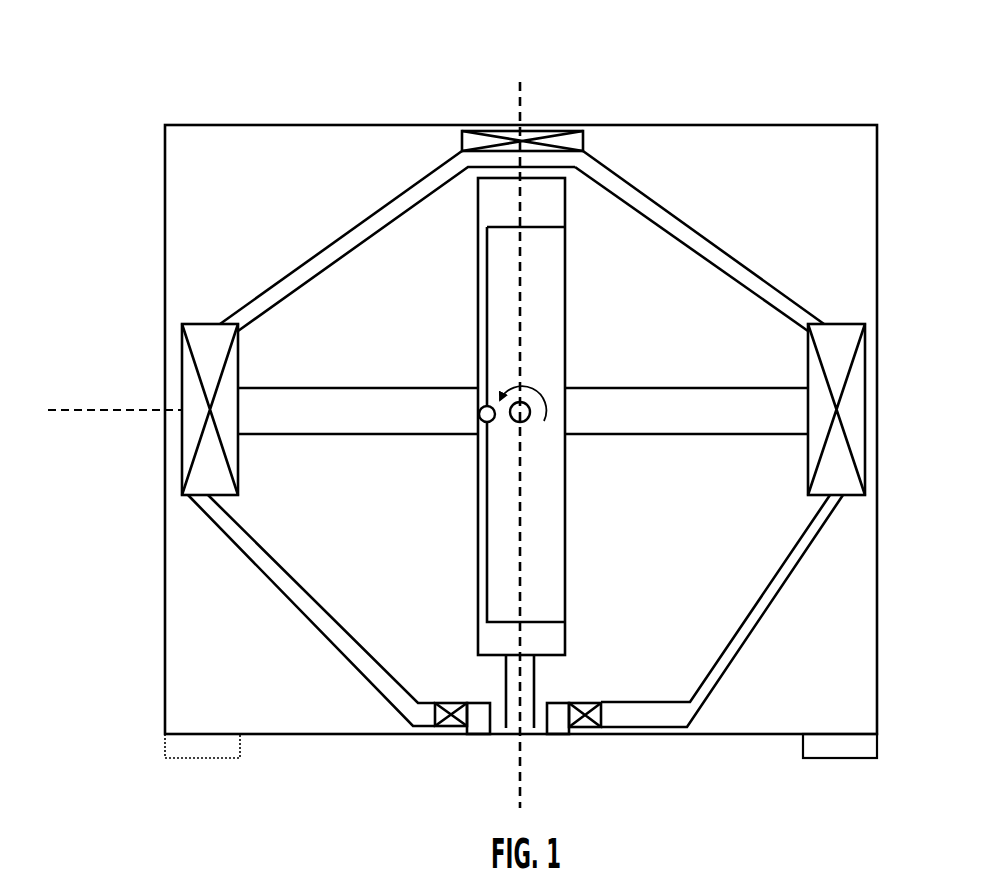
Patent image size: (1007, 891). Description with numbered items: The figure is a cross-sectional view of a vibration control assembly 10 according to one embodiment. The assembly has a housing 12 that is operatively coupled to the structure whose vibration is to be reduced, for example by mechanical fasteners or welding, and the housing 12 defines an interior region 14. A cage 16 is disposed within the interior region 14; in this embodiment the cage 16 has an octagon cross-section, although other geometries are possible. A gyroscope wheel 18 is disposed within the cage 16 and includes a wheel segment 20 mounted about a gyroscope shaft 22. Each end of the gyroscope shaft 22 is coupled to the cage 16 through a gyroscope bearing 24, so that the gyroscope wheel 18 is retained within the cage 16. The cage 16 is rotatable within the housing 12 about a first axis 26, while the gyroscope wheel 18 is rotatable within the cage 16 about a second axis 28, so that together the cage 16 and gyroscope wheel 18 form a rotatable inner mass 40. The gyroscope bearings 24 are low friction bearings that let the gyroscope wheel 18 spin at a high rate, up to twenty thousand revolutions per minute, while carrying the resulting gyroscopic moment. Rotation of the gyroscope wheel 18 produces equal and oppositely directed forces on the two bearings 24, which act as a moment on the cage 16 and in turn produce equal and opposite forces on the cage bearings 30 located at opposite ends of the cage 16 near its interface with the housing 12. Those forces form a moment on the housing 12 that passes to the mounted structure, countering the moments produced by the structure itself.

The vibration control assembly 10 is at (198, 65).
The housing 12 is at (164, 262).
The interior region 14 is at (210, 168).
The cage 16 is at (700, 240).
The gyroscope wheel 18 is at (417, 448).
The wheel segment 20 is at (483, 587).
The gyroscope shaft 22 is at (317, 395).
The gyroscope bearing 24 is at (190, 440).
The first axis 26 is at (519, 770).
The second axis 28 is at (113, 408).
The cage bearings 30 is at (437, 712).
The rotatable inner mass 40 is at (817, 303).